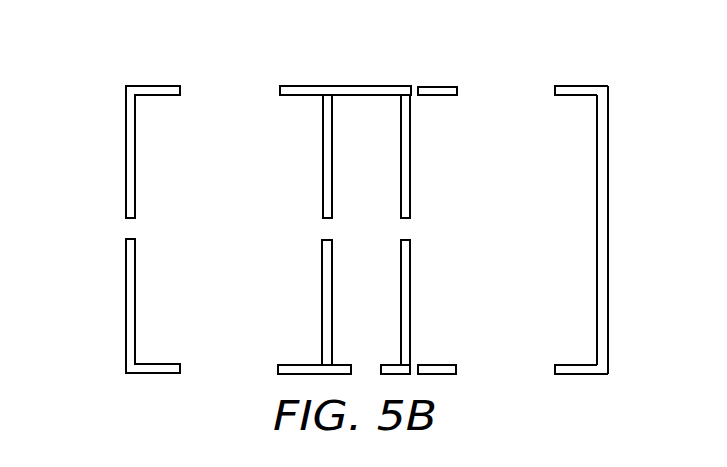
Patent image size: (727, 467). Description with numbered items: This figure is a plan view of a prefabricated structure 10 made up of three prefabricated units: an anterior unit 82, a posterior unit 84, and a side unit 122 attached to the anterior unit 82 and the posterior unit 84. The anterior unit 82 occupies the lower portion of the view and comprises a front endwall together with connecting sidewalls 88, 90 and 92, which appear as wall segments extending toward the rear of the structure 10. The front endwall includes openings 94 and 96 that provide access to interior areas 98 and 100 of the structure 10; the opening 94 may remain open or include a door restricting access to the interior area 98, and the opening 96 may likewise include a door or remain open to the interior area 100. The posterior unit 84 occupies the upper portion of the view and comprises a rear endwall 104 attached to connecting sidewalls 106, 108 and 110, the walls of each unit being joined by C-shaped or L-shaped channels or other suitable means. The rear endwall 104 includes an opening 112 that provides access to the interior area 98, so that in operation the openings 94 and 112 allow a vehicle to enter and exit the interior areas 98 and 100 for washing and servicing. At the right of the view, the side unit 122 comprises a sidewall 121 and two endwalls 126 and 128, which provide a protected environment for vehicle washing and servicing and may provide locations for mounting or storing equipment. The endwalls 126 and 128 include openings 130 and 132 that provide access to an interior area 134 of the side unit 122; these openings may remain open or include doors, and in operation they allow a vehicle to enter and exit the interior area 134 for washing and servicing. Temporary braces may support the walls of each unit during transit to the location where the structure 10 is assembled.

The structure 10 is at (72, 405).
The prefabricated anterior unit 82 is at (95, 356).
The prefabricated posterior unit 84 is at (163, 52).
The connecting sidewall 88 is at (126, 300).
The connecting sidewall 90 is at (322, 299).
The connecting sidewall 92 is at (411, 292).
The opening 94 is at (251, 380).
The opening 96 is at (370, 367).
The interior area 98 is at (251, 236).
The interior area 100 is at (388, 236).
The rear endwall 104 is at (297, 86).
The connecting sidewall 106 is at (136, 135).
The connecting sidewall 108 is at (322, 147).
The connecting sidewall 110 is at (411, 147).
The opening 112 is at (253, 100).
The vertical member 121 is at (609, 320).
The prefabricated side unit 122 is at (530, 402).
The endwall 126 is at (590, 375).
The endwall 128 is at (583, 86).
The opening 130 is at (528, 380).
The opening 132 is at (535, 100).
The interior area 134 is at (550, 236).